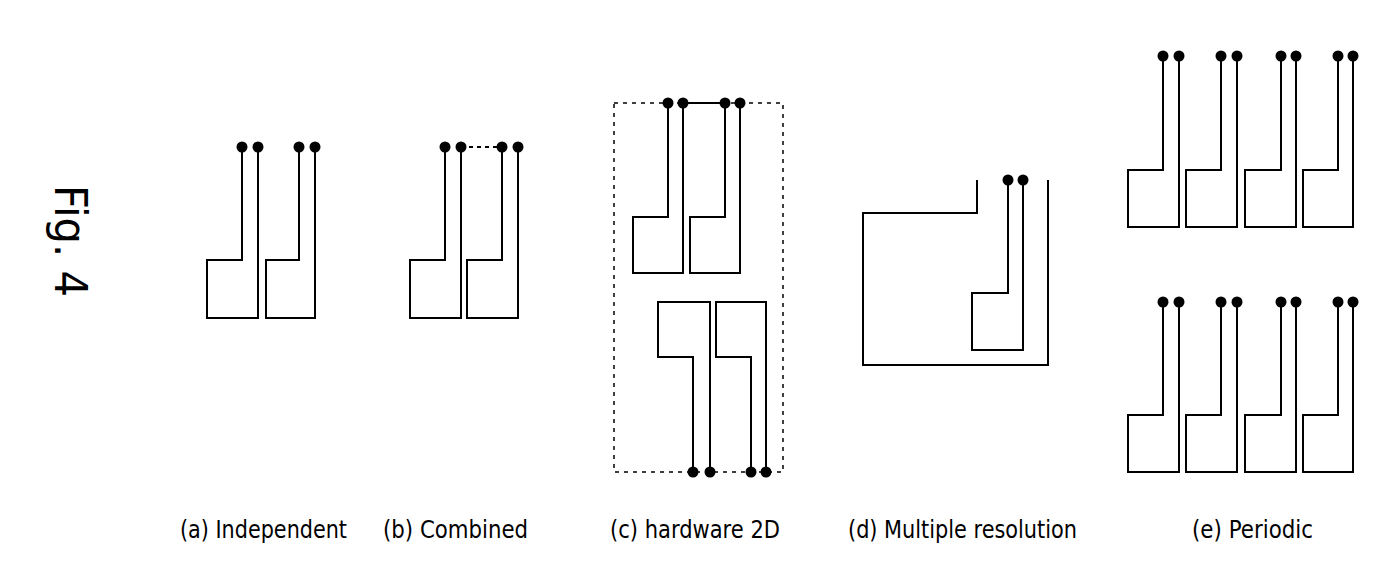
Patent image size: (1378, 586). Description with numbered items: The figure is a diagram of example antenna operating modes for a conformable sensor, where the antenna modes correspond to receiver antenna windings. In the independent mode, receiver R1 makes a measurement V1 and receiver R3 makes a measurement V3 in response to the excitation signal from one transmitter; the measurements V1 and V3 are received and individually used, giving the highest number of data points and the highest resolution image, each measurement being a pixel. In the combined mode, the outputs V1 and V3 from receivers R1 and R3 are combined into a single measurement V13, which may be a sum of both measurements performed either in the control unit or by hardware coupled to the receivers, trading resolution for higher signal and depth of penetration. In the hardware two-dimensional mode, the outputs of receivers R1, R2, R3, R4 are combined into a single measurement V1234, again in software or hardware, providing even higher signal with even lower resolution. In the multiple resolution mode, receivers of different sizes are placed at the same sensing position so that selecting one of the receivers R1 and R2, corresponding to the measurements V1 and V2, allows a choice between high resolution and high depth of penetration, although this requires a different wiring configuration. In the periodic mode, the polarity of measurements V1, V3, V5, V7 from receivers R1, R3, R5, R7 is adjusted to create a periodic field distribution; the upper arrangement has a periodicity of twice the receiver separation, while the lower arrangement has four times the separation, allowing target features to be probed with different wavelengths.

The receiver R1 is at (693, 264).
The receiver R2 is at (856, 317).
The receiver R3 is at (751, 264).
The receiver R4 is at (741, 387).
The receiver R5 is at (1270, 264).
The receiver R7 is at (1328, 264).
The measurement V1 is at (710, 165).
The measurement V2 is at (1017, 126).
The measurement V3 is at (769, 165).
The measurement V5 is at (1289, 165).
The measurement V7 is at (1347, 165).
The combined measurement V13 is at (482, 133).
The combined measurement V1234 is at (717, 271).